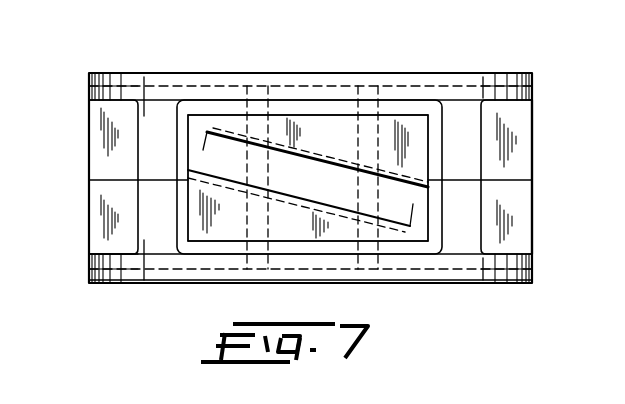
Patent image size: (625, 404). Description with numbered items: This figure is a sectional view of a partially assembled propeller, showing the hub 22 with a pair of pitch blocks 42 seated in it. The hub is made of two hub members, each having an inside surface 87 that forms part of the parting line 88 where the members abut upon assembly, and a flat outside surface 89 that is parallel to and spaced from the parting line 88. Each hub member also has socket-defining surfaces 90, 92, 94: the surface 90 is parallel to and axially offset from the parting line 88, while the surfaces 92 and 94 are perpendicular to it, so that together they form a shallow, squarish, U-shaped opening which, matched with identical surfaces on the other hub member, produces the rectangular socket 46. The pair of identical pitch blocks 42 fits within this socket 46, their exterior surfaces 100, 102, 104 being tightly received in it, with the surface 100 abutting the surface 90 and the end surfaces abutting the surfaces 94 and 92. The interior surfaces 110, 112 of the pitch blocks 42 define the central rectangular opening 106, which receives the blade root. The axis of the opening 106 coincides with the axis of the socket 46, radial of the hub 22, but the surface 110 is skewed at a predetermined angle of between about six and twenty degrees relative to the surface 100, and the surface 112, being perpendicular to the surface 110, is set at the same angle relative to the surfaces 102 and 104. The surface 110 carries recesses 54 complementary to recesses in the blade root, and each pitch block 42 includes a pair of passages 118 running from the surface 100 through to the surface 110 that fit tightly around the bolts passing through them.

The hub 22 is at (131, 71).
The pitch block 42 is at (401, 112).
The rectangular socket 46 is at (278, 240).
The recess 54 is at (310, 152).
The inside surface 87 is at (108, 179).
The parting line 88 is at (532, 181).
The flat outside surface 89 is at (115, 284).
The socket-defining surface 90 is at (308, 125).
The socket-defining surface 92 is at (422, 147).
The socket-defining surface 94 is at (190, 156).
The exterior surface 100 is at (327, 114).
The exterior surface 102 is at (187, 124).
The exterior surface 104 is at (431, 122).
The central rectangular opening 106 is at (282, 173).
The interior surface 110 is at (313, 197).
The interior surface 112 is at (204, 142).
The passage 118 is at (252, 88).